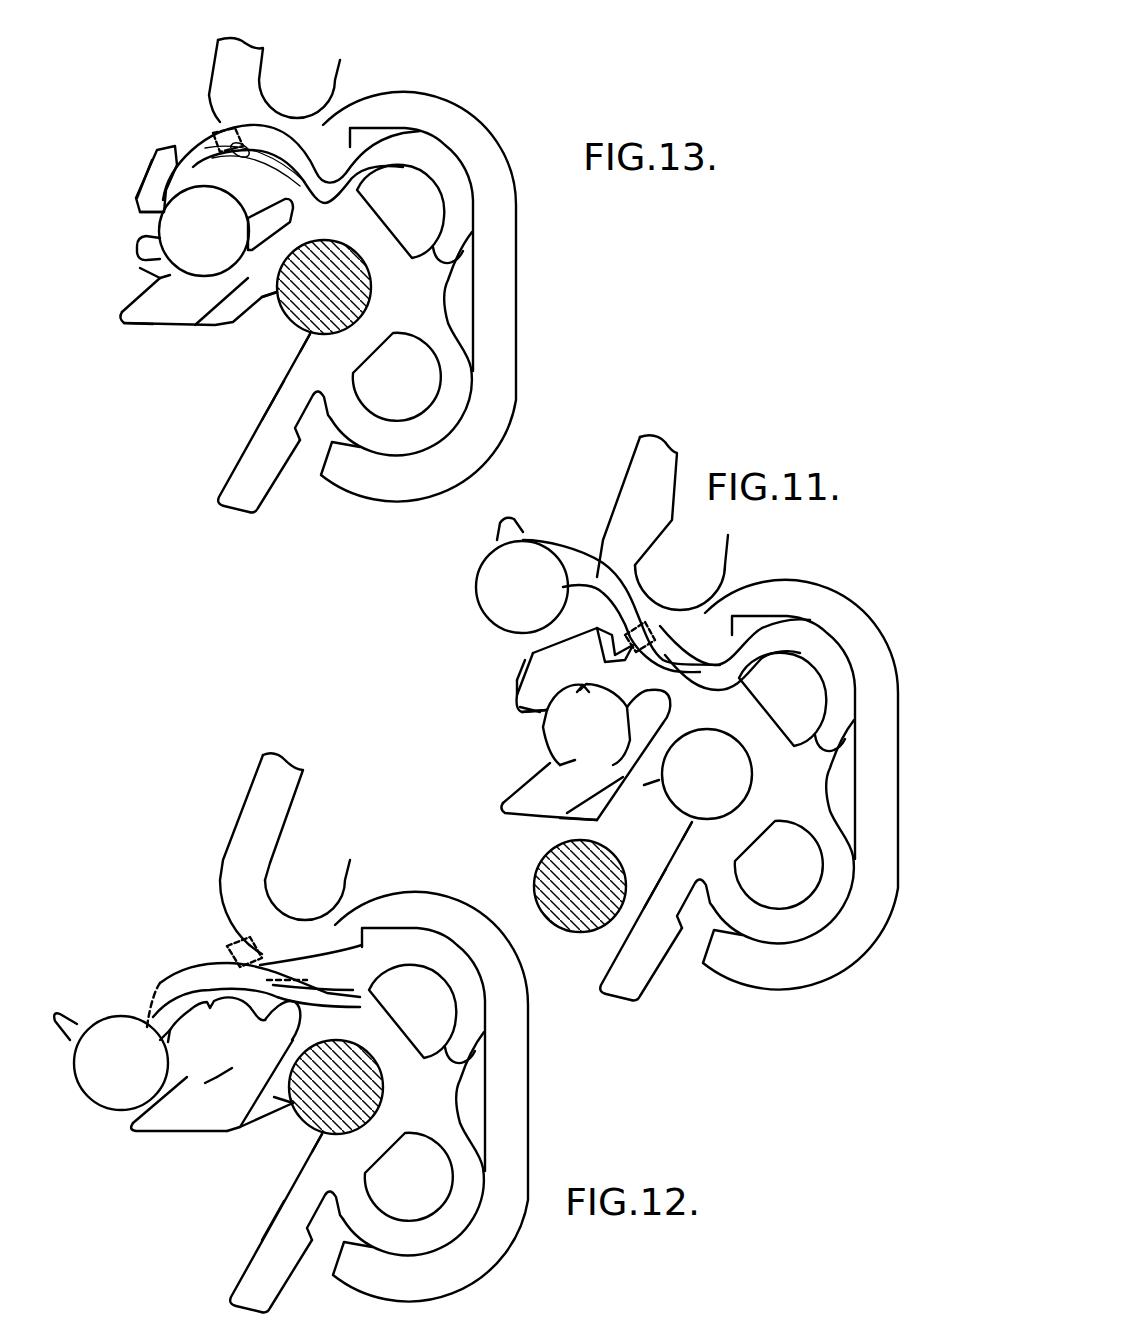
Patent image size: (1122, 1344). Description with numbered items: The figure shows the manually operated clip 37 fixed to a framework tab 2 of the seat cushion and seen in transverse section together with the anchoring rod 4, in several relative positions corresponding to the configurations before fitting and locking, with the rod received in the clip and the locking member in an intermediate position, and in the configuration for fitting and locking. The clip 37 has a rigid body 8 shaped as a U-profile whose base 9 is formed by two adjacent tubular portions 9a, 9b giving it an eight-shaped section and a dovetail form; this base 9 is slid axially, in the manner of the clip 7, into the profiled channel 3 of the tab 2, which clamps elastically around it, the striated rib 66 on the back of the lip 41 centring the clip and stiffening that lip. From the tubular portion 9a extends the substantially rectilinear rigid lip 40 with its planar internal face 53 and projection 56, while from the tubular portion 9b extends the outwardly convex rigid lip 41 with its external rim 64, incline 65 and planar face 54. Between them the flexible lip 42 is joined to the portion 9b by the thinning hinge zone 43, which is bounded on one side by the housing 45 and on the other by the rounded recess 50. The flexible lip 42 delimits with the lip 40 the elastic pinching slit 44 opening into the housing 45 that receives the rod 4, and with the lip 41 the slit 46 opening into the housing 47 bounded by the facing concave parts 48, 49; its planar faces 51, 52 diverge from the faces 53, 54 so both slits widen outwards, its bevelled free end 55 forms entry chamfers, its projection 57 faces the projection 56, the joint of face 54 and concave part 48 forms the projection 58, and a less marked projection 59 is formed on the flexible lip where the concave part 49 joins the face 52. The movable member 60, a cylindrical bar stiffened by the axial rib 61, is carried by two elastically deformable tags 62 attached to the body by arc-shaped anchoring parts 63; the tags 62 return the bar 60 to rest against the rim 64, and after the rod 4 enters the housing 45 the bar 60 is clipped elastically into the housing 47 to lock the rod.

In FIG. 13, the tab 2 is at (227, 55).
In FIG. 11, the tab 2 is at (634, 503).
In FIG. 12, the tab 2 is at (260, 807).
In FIG. 13, the profiled channel 3 is at (500, 240).
In FIG. 11, the profiled channel 3 is at (800, 785).
In FIG. 12, the profiled channel 3 is at (447, 1097).
In FIG. 13, the anchoring rod 4 is at (325, 297).
In FIG. 11, the anchoring rod 4 is at (578, 896).
In FIG. 12, the anchoring rod 4 is at (335, 1099).
In FIG. 13, the clip 7 is at (140, 268).
In FIG. 13, the rigid body 8 is at (329, 413).
In FIG. 11, the rigid body 8 is at (692, 945).
In FIG. 12, the rigid body 8 is at (316, 1255).
In FIG. 13, the base 9 is at (433, 295).
In FIG. 11, the base 9 is at (783, 823).
In FIG. 12, the base 9 is at (448, 1143).
In FIG. 13, the tubular portion 9a is at (383, 443).
In FIG. 11, the tubular portion 9a is at (802, 918).
In FIG. 12, the tubular portion 9a is at (442, 1224).
In FIG. 13, the tubular portion 9b is at (380, 231).
In FIG. 11, the tubular portion 9b is at (805, 646).
In FIG. 12, the tubular portion 9b is at (476, 1050).
In FIG. 11, the clip 37 is at (507, 732).
In FIG. 13, the rigid lip 40 is at (245, 472).
In FIG. 11, the rigid lip 40 is at (646, 933).
In FIG. 12, the rigid lip 40 is at (252, 1223).
In FIG. 11, the rigid lip 41 is at (610, 657).
In FIG. 13, the flexible lip 42 is at (195, 327).
In FIG. 11, the flexible lip 42 is at (537, 808).
In FIG. 11, the end connection part 43 is at (743, 699).
In FIG. 12, the end connection part 43 is at (378, 1011).
In FIG. 11, the elastic pinching slit 44 is at (600, 825).
In FIG. 11, the housing 45 is at (707, 774).
In FIG. 11, the elastic pinching slit 46 is at (520, 712).
In FIG. 11, the housing 47 is at (572, 729).
In FIG. 12, the housing 47 is at (239, 1043).
In FIG. 11, the concave part 48 is at (577, 691).
In FIG. 12, the concave part 48 is at (217, 978).
In FIG. 11, the concave part 49 is at (603, 763).
In FIG. 12, the concave part 49 is at (215, 1078).
In FIG. 13, the recess 50 is at (278, 207).
In FIG. 11, the recess 50 is at (662, 696).
In FIG. 12, the recess 50 is at (295, 1003).
In FIG. 13, the planar lateral face 51 is at (233, 325).
In FIG. 11, the planar lateral face 51 is at (630, 803).
In FIG. 12, the planar lateral face 51 is at (243, 1120).
In FIG. 13, the planar lateral face 52 is at (158, 279).
In FIG. 11, the planar lateral face 52 is at (547, 767).
In FIG. 12, the planar lateral face 52 is at (183, 1077).
In FIG. 13, the planar internal face 53 is at (273, 400).
In FIG. 11, the planar internal face 53 is at (648, 876).
In FIG. 12, the planar internal face 53 is at (239, 1236).
In FIG. 13, the planar face 54 is at (143, 213).
In FIG. 11, the planar face 54 is at (525, 715).
In FIG. 12, the planar face 54 is at (160, 1040).
In FIG. 13, the free end part 55 is at (153, 317).
In FIG. 11, the free end part 55 is at (507, 805).
In FIG. 12, the free end part 55 is at (167, 1115).
In FIG. 13, the projection 56 is at (313, 333).
In FIG. 11, the projection 56 is at (683, 811).
In FIG. 12, the projection 56 is at (293, 1163).
In FIG. 13, the projection 57 is at (273, 297).
In FIG. 11, the projection 57 is at (675, 766).
In FIG. 12, the projection 57 is at (273, 1127).
In FIG. 11, the projection 58 is at (548, 737).
In FIG. 12, the projection 58 is at (184, 1051).
In FIG. 11, the stop face 59 is at (563, 770).
In FIG. 12, the stop face 59 is at (217, 1077).
In FIG. 13, the movable member 60 is at (183, 228).
In FIG. 11, the movable member 60 is at (503, 578).
In FIG. 12, the movable member 60 is at (117, 1040).
In FIG. 13, the axial rib 61 is at (145, 248).
In FIG. 11, the axial rib 61 is at (508, 537).
In FIG. 12, the axial rib 61 is at (65, 1026).
In FIG. 13, the elastically deformable tag 62 is at (195, 155).
In FIG. 11, the elastically deformable tag 62 is at (630, 602).
In FIG. 12, the elastically deformable tag 62 is at (217, 963).
In FIG. 13, the anchoring part 63 is at (420, 155).
In FIG. 11, the anchoring part 63 is at (811, 711).
In FIG. 12, the anchoring part 63 is at (423, 1012).
In FIG. 13, the external rim 64 is at (160, 148).
In FIG. 11, the external rim 64 is at (530, 657).
In FIG. 12, the external rim 64 is at (170, 967).
In FIG. 13, the incline 65 is at (148, 175).
In FIG. 11, the incline 65 is at (517, 672).
In FIG. 13, the striated rib 66 is at (240, 143).
In FIG. 11, the striated rib 66 is at (626, 635).
In FIG. 12, the striated rib 66 is at (250, 947).